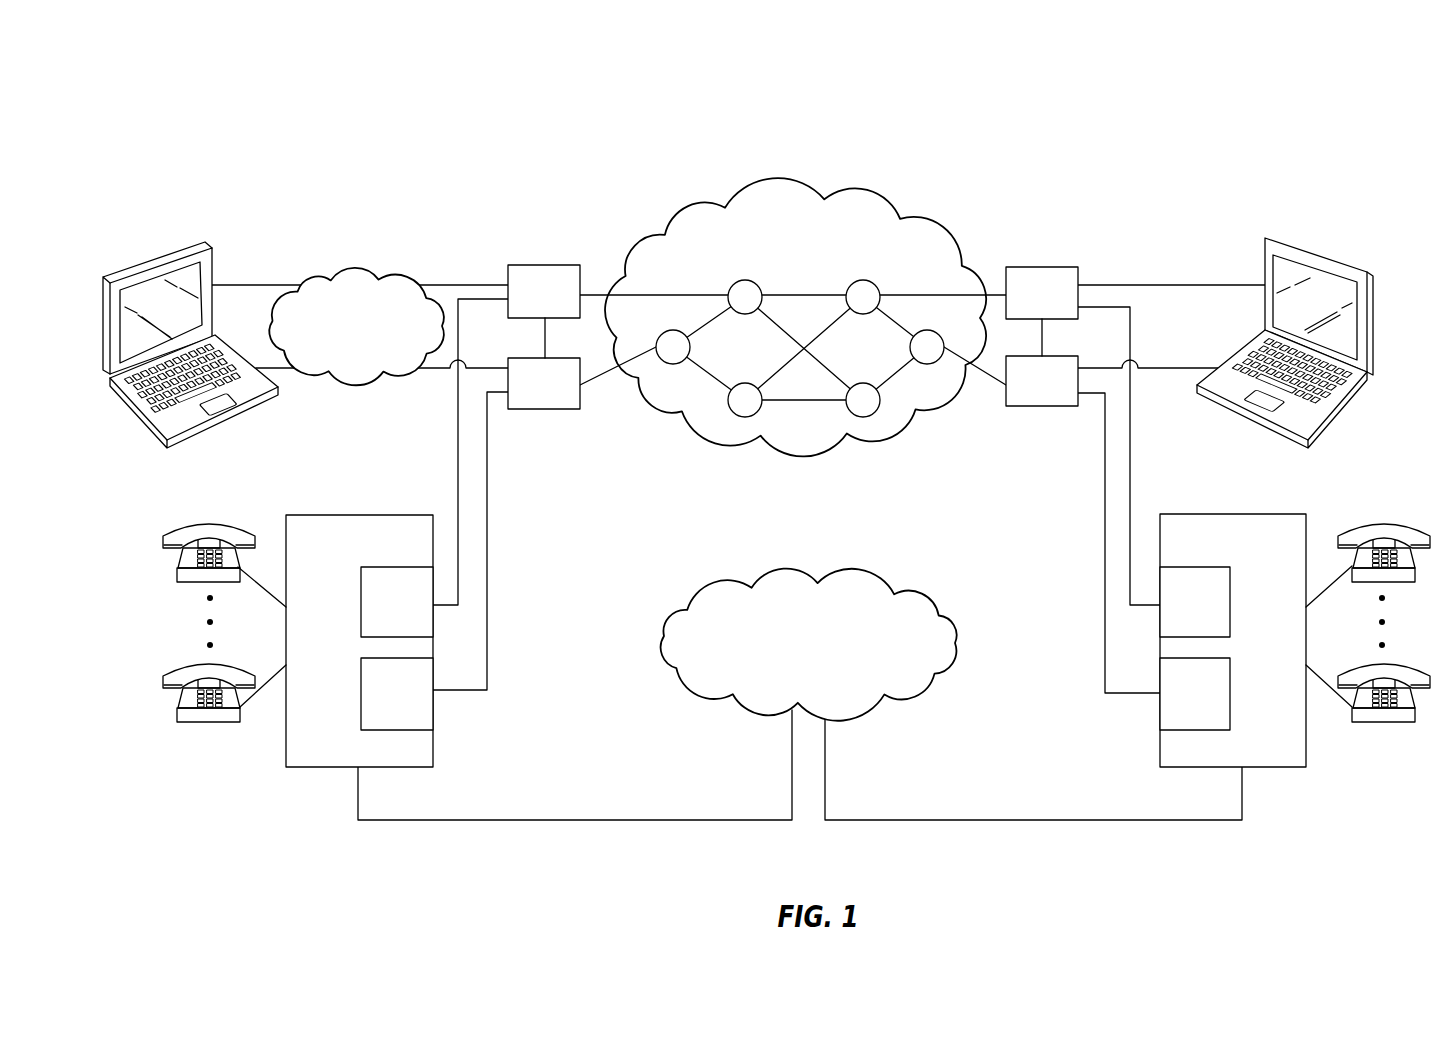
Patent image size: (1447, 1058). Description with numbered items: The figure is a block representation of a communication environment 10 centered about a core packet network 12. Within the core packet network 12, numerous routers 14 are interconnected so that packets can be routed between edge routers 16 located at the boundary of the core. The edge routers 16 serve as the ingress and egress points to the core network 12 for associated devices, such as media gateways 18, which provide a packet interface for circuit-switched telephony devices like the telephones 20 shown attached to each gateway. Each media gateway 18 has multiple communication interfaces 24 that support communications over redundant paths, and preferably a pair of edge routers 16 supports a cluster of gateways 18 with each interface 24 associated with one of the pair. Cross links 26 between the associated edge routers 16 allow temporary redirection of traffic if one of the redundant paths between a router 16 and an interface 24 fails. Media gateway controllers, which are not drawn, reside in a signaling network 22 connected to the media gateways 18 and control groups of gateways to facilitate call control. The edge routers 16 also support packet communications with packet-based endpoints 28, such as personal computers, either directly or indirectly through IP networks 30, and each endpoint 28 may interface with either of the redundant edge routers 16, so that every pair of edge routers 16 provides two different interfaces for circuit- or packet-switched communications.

The communication environment 10 is at (1093, 140).
The core packet network 12 is at (907, 222).
The routers 14 is at (733, 285).
The edge routers 16 is at (531, 304).
The media gateways 18 is at (309, 745).
The telephones 20 is at (201, 523).
The signaling network 22 is at (898, 692).
The communication interfaces 24 is at (384, 609).
The cross links 26 is at (547, 343).
The packet-based endpoints 28 is at (217, 274).
The IP networks 30 is at (384, 278).